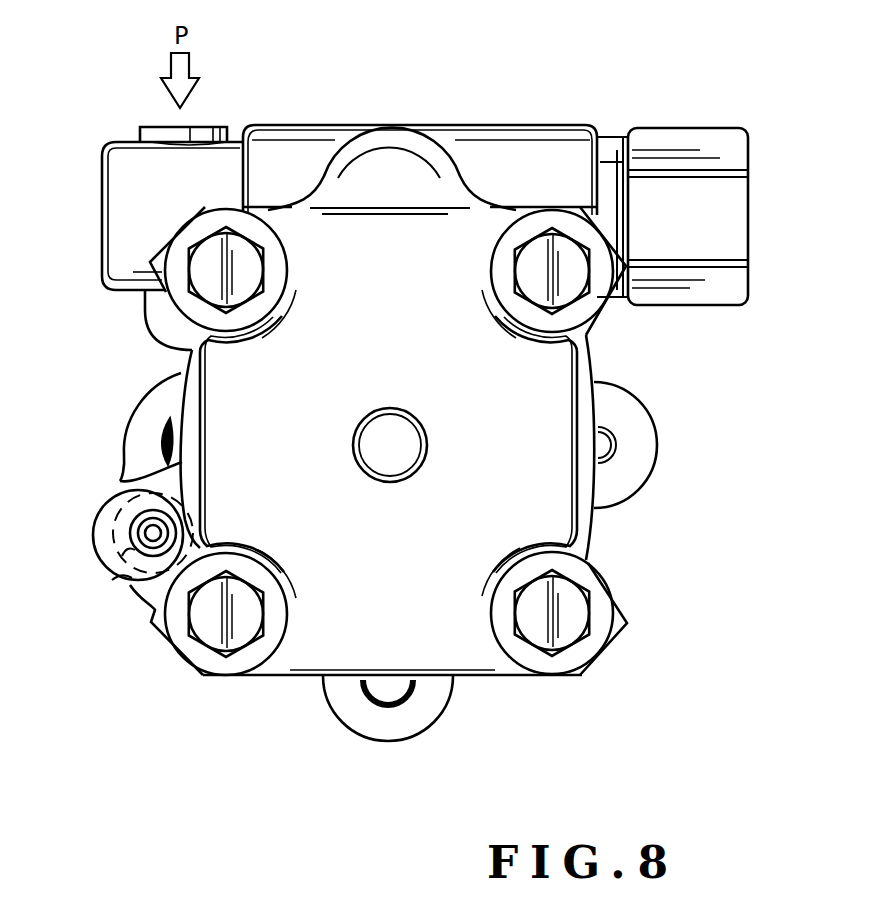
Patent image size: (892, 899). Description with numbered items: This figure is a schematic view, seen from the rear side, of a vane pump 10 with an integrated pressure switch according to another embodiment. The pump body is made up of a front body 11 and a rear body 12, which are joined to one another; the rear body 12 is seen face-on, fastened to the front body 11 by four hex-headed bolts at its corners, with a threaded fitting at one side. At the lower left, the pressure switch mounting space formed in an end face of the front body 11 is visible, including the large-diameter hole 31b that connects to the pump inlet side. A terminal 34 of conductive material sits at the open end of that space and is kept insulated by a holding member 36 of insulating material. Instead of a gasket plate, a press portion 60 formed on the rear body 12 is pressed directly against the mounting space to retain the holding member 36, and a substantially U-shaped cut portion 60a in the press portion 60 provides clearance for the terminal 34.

The vane pump 10 is at (531, 96).
The front body 11 is at (155, 398).
The rear body 12 is at (530, 412).
The terminal 34 is at (153, 541).
The holding member 36 is at (118, 490).
The press portion 60 is at (110, 503).
The U-shaped cut portion 60a is at (127, 552).
The large-diameter hole 31b is at (132, 577).